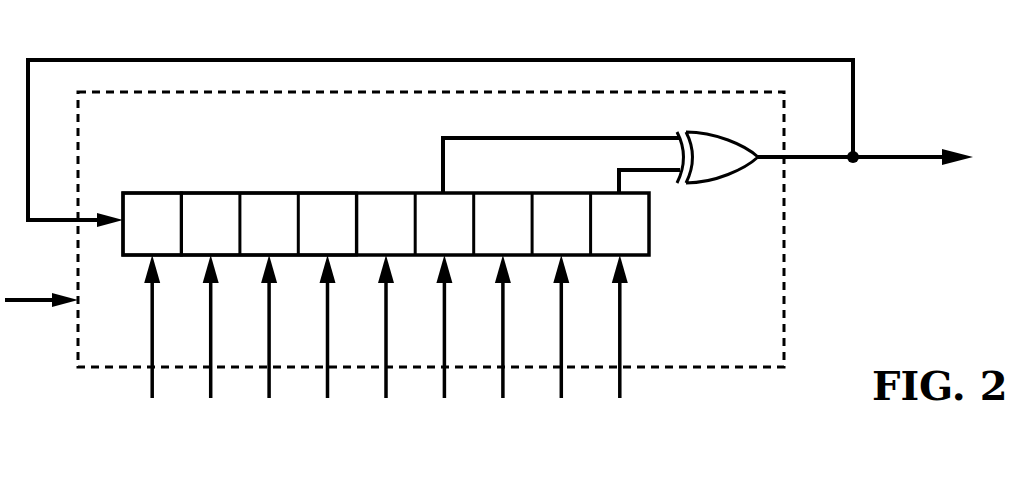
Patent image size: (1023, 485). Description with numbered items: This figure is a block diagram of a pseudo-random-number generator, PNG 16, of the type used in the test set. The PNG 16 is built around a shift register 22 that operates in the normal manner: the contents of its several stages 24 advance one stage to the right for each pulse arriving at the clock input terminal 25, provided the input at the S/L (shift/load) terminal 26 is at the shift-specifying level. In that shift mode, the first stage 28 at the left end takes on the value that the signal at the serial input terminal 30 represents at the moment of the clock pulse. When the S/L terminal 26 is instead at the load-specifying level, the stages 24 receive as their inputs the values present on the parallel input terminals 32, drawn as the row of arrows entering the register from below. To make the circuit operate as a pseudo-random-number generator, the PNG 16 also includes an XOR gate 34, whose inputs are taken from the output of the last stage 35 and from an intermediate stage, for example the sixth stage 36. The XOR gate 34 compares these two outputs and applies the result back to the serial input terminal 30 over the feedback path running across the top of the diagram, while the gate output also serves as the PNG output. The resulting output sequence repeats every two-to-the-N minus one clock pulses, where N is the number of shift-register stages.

The pseudo-random-number generator 16 is at (784, 258).
The shift register 22 is at (670, 268).
The stages 24 is at (318, 193).
The clock input terminal 25 is at (82, 340).
The S/L (shift/load) terminal 26 is at (76, 296).
The first stage 28 is at (140, 193).
The serial input terminal 30 is at (78, 221).
The parallel input terminals 32 is at (205, 380).
The XOR gate 34 is at (728, 184).
The last stage 35 is at (605, 193).
The sixth stage 36 is at (430, 193).